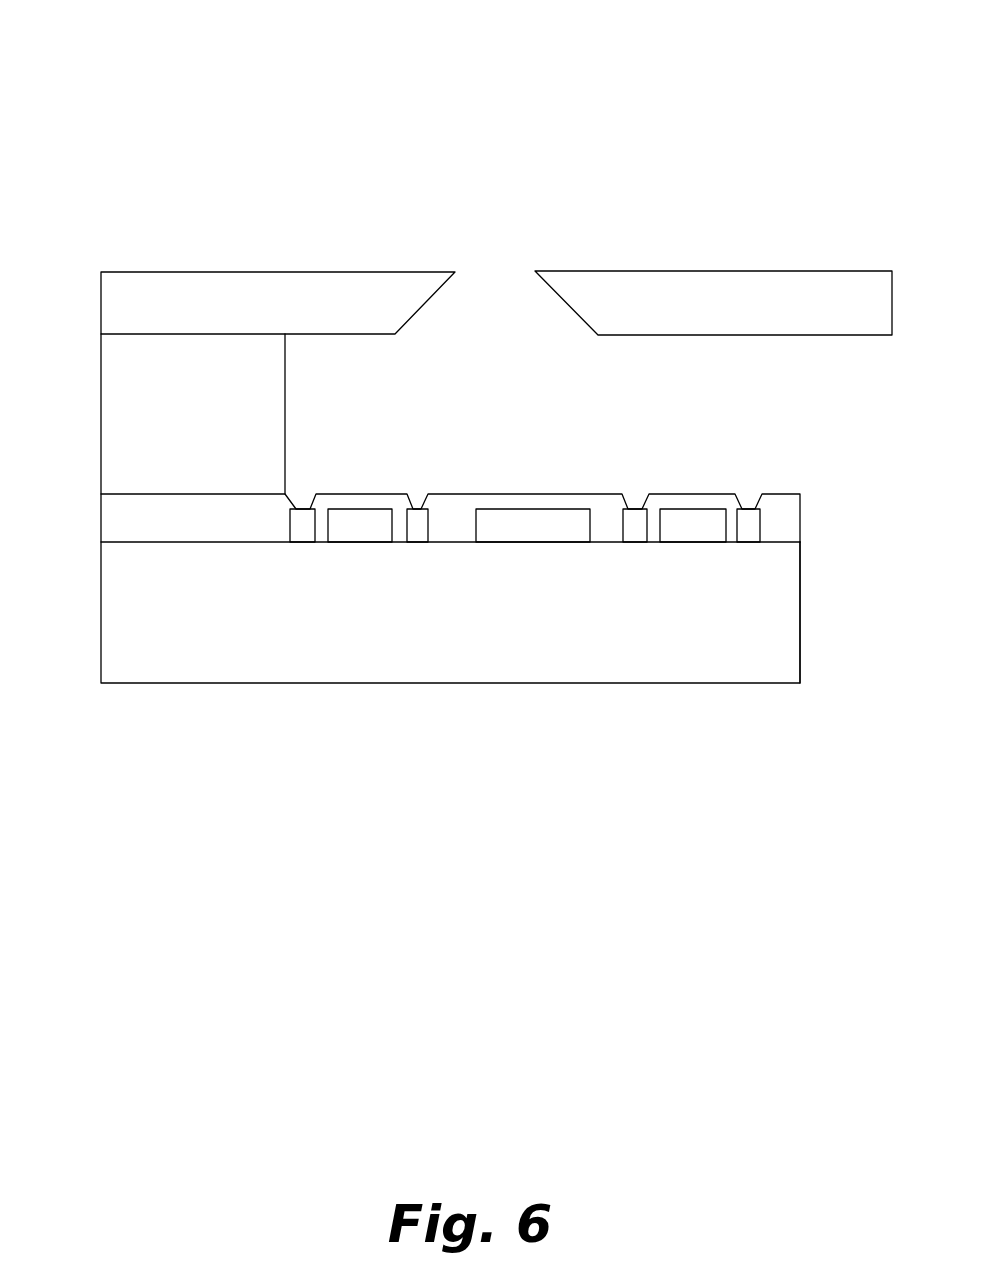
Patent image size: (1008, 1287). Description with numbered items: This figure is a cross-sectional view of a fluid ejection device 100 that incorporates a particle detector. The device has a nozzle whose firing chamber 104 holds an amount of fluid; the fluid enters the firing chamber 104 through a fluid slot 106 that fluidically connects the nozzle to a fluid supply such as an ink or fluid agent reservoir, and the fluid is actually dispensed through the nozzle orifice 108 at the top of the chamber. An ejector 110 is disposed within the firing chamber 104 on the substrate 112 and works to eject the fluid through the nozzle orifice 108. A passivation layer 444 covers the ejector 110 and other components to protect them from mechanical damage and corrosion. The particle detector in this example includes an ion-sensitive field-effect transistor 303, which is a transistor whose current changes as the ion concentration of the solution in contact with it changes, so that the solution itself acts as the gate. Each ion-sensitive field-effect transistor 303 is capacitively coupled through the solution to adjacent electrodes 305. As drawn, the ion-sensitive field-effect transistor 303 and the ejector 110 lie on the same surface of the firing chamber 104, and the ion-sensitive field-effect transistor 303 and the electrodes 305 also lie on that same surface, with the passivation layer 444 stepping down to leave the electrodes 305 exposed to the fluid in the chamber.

The fluid ejection device 100 is at (230, 95).
The firing chamber 104 is at (367, 415).
The fluid slot 106 is at (828, 622).
The nozzle orifice 108 is at (499, 312).
The ejector 110 is at (524, 525).
The substrate 112 is at (150, 653).
The ion-sensitive field-effect transistor 303 is at (365, 525).
The electrode 305 is at (298, 525).
The passivation layer 444 is at (132, 523).